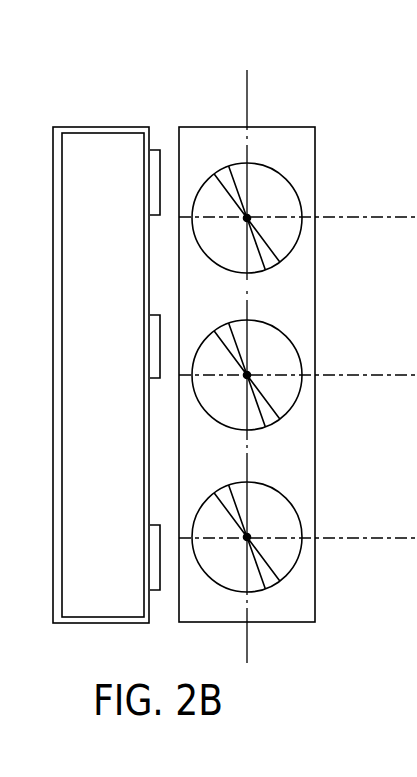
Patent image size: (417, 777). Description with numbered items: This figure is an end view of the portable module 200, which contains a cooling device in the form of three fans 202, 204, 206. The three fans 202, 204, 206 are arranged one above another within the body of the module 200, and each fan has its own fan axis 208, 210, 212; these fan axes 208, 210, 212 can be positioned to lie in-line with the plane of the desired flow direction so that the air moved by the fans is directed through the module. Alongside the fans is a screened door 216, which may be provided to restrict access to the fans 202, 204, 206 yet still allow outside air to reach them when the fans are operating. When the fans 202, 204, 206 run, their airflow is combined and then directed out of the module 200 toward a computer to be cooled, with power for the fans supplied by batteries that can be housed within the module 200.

The portable module 200 is at (289, 108).
The fan 202 is at (267, 240).
The fan 204 is at (267, 397).
The fan 206 is at (267, 560).
The fan axis 208 is at (355, 214).
The fan axis 210 is at (355, 372).
The fan axis 212 is at (355, 537).
The screened door 216 is at (97, 118).